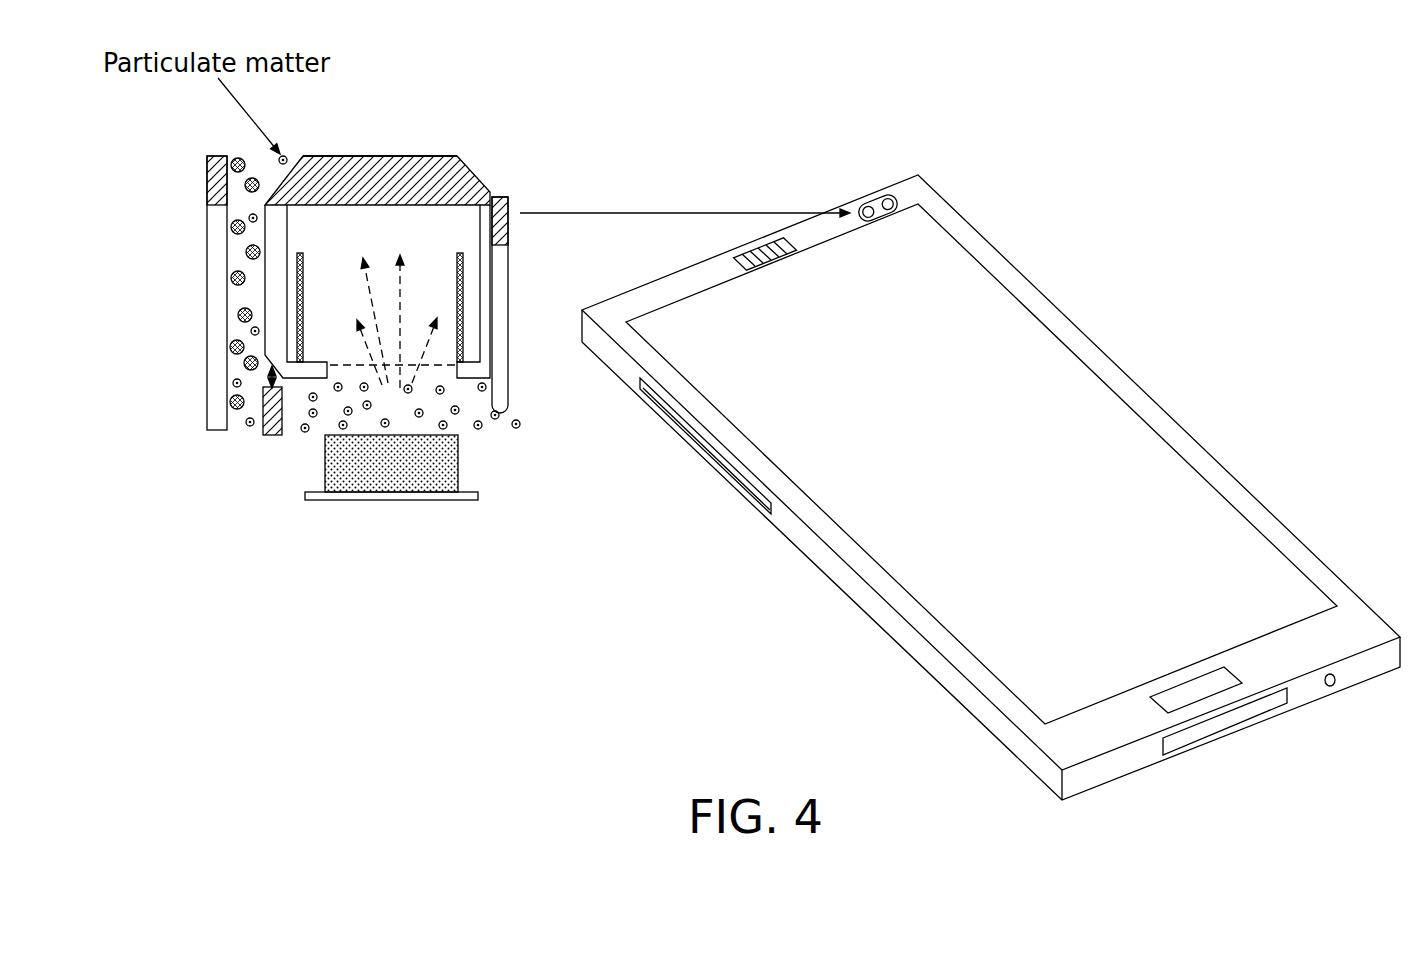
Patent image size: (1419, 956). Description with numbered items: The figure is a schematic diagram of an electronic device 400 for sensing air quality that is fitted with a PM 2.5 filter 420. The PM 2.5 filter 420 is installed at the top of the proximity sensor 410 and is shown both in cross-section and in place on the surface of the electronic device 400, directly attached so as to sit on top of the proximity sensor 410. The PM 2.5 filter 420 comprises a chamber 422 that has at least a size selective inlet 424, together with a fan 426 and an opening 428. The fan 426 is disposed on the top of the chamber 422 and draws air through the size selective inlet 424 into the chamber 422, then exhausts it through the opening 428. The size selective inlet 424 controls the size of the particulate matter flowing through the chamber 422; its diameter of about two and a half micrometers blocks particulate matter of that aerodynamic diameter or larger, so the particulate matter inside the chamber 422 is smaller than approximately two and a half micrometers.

The electronic device 400 is at (1074, 157).
The proximity sensor 410 is at (365, 506).
The PM 2.5 filter 420 is at (462, 146).
The chamber 422 is at (273, 270).
The size selective inlet 424 is at (268, 377).
The fan 426 is at (420, 178).
The opening 428 is at (343, 157).